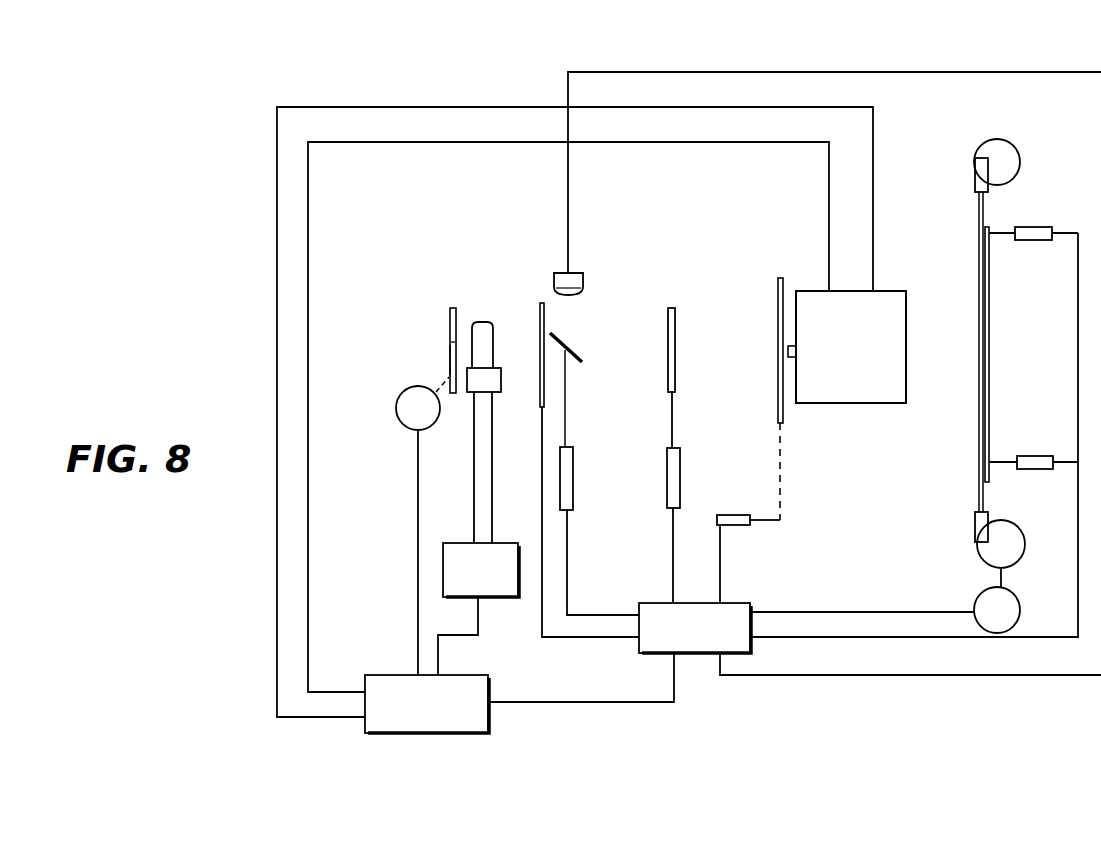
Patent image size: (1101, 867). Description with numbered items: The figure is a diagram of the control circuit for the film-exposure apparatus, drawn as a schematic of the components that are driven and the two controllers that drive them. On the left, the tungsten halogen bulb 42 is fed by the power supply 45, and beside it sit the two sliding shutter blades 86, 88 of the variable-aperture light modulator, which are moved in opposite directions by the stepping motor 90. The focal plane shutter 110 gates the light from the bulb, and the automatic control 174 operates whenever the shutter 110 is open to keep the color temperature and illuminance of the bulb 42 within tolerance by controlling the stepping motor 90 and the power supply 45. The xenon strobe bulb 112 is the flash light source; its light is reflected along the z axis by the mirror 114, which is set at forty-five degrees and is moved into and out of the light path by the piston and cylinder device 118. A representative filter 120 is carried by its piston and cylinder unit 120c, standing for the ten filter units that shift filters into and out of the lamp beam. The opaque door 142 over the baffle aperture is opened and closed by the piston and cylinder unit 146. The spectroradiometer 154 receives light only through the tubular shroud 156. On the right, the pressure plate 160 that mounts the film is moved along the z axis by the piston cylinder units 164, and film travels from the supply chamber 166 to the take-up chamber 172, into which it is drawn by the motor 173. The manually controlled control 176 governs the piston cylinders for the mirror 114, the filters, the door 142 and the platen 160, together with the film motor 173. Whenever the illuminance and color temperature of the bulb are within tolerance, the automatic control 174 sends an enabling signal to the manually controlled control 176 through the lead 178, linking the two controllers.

The tungsten halogen bulb 42 is at (485, 330).
The power supply 45 is at (458, 543).
The shutter blade 86 is at (450, 318).
The shutter blade 88 is at (450, 360).
The stepping motor 90 is at (397, 398).
The shutter 110 is at (540, 318).
The xenon strobe bulb 112 is at (573, 278).
The mirror 114 is at (578, 352).
The piston and cylinder device 118 is at (573, 470).
The filter 120 is at (675, 325).
The piston and cylinder unit 120c is at (680, 470).
The opaque door 142 is at (778, 300).
The piston and cylinder unit 146 is at (737, 525).
The spectroradiometer 154 is at (893, 305).
The tubular shroud 156 is at (797, 350).
The pressure plate 160 is at (989, 330).
The piston cylinder units 164 is at (1035, 227).
The chamber 166 is at (975, 160).
The take-up chamber 172 is at (975, 537).
The motor 173 is at (985, 598).
The automatic control 174 is at (388, 675).
The manually controlled control 176 is at (655, 650).
The lead 178 is at (560, 702).